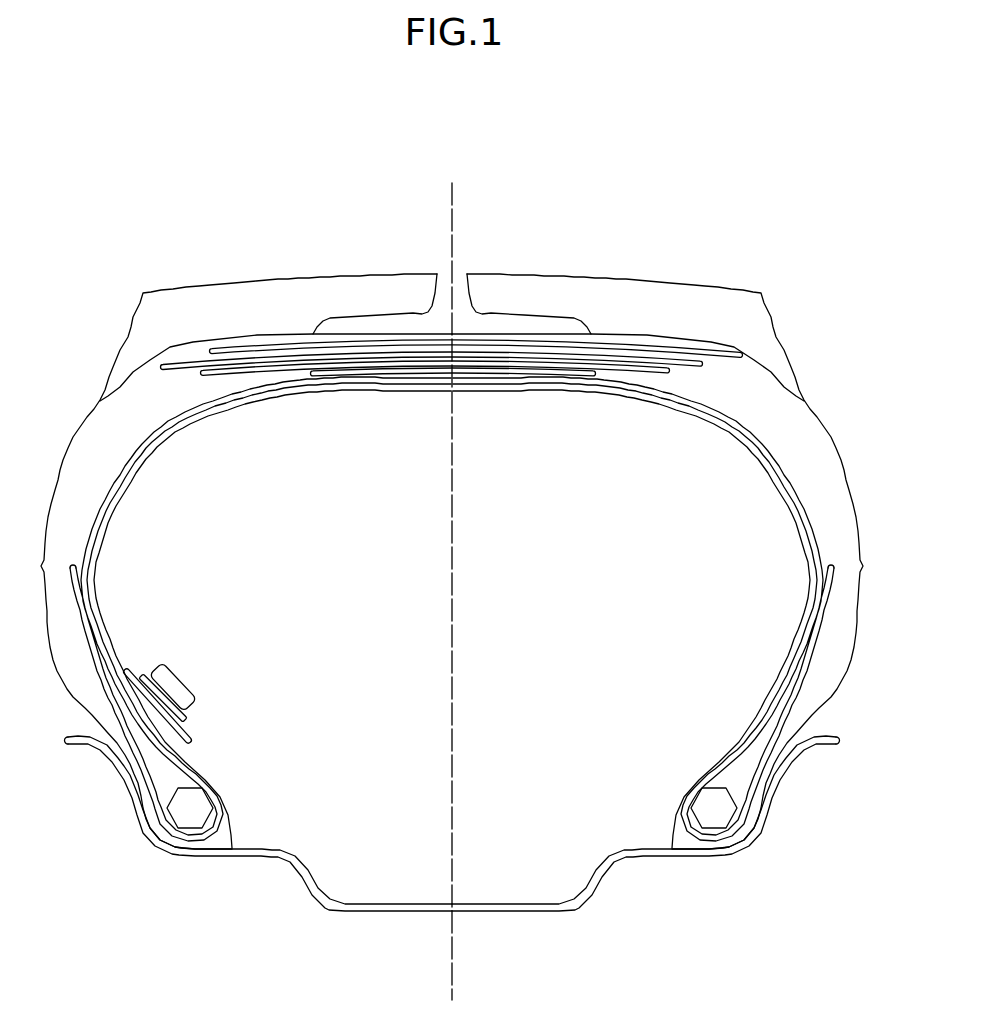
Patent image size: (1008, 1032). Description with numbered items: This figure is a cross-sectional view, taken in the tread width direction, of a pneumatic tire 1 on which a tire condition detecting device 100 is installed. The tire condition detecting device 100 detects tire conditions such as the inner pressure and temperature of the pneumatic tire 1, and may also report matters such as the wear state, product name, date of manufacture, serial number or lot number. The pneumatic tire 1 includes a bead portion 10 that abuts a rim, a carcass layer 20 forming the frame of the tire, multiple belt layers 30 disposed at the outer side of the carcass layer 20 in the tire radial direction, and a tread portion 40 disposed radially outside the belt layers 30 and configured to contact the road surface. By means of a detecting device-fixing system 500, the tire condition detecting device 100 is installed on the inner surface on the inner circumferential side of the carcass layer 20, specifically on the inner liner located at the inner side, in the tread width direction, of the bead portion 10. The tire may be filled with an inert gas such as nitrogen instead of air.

The pneumatic tire 1 is at (452, 468).
The bead portion 10 is at (452, 773).
The carcass layer 20 is at (790, 495).
The belt layers 30 is at (452, 294).
The tread portion 40 is at (452, 289).
The tire condition detecting device 100 is at (208, 664).
The detecting device-fixing system 500 is at (155, 666).